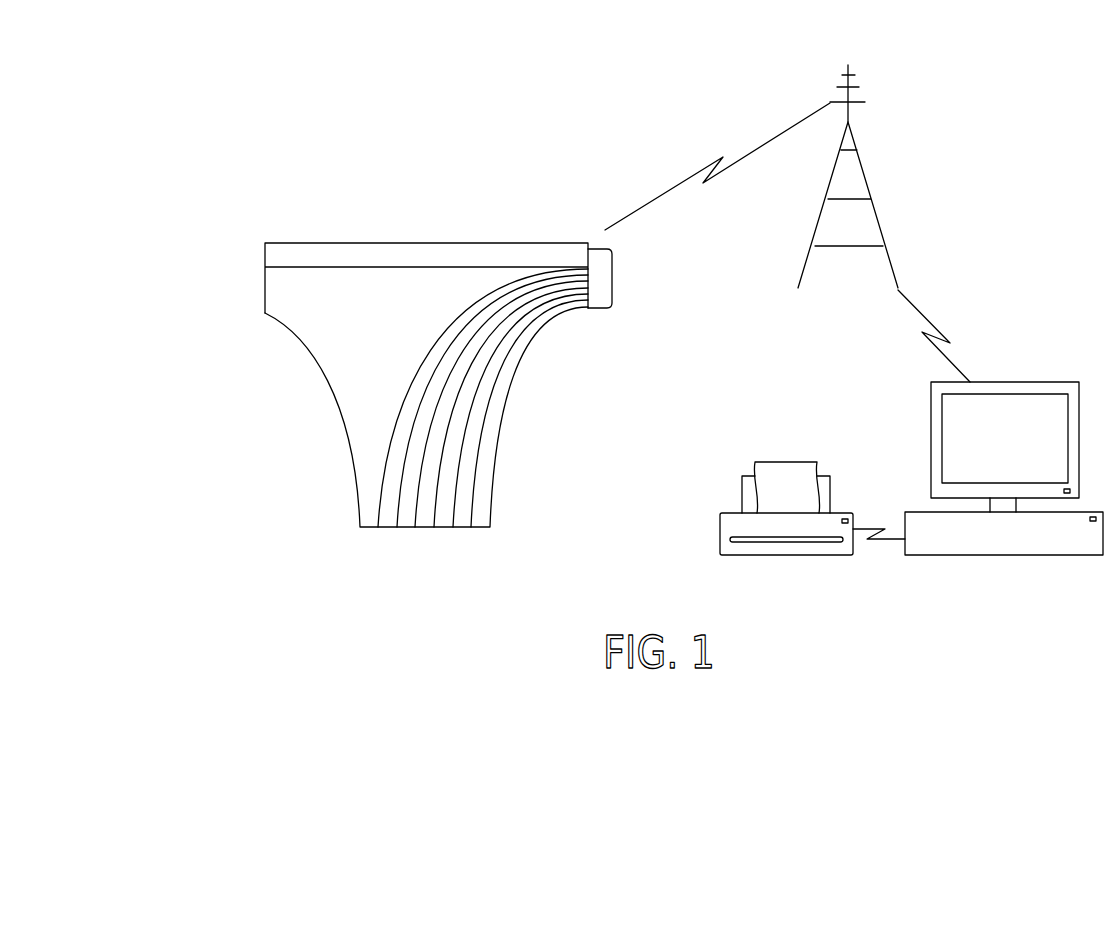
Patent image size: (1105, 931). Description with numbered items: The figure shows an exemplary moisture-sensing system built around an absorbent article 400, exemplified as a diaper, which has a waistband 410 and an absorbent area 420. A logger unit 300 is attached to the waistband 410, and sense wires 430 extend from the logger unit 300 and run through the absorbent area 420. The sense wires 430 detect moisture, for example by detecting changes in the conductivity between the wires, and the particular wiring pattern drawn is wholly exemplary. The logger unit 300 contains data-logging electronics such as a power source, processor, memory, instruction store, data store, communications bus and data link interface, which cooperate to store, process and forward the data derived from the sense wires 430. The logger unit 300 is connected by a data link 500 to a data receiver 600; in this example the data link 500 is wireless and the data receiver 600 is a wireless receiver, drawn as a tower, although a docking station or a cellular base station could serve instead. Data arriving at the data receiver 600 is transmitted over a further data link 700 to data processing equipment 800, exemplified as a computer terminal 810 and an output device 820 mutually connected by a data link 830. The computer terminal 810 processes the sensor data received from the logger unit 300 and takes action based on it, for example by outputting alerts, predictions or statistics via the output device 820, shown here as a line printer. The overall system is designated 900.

The logger unit 300 is at (614, 317).
The absorbent article 400 is at (218, 263).
The waistband 410 is at (440, 243).
The absorbent area 420 is at (343, 362).
The sense wires 430 is at (360, 533).
The data link 500 is at (766, 145).
The data receiver 600 is at (878, 220).
The further data link 700 is at (932, 320).
The data processing equipment 800 is at (883, 604).
The computer terminal 810 is at (1003, 556).
The output device 820 is at (782, 556).
The data link 830 is at (875, 527).
The monitoring system 900 is at (1000, 70).